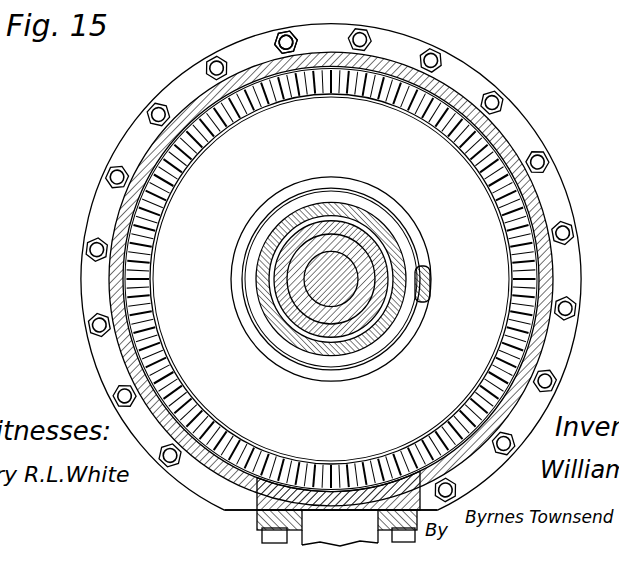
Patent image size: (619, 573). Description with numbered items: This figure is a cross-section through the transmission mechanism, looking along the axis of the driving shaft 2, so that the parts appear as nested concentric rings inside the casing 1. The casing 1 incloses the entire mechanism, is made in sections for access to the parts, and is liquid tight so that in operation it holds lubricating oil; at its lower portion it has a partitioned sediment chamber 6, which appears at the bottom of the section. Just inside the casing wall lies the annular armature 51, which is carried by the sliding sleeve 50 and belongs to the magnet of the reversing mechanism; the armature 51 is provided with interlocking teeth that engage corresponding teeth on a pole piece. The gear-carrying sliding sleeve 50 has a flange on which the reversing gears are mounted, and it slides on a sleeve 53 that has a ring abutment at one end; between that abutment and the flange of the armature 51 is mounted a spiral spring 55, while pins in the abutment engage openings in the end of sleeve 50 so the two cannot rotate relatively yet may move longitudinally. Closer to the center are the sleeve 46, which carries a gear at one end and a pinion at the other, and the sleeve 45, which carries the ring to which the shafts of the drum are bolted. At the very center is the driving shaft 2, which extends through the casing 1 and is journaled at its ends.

The casing 1 is at (457, 92).
The annular armature 51 is at (462, 167).
The spiral spring 55 is at (392, 357).
The sliding sleeve 50 is at (290, 338).
The sleeve 53 is at (280, 327).
The sleeve 45 is at (378, 305).
The sleeve 46 is at (370, 287).
The driving shaft 2 is at (345, 273).
The sediment chamber 6 is at (331, 509).